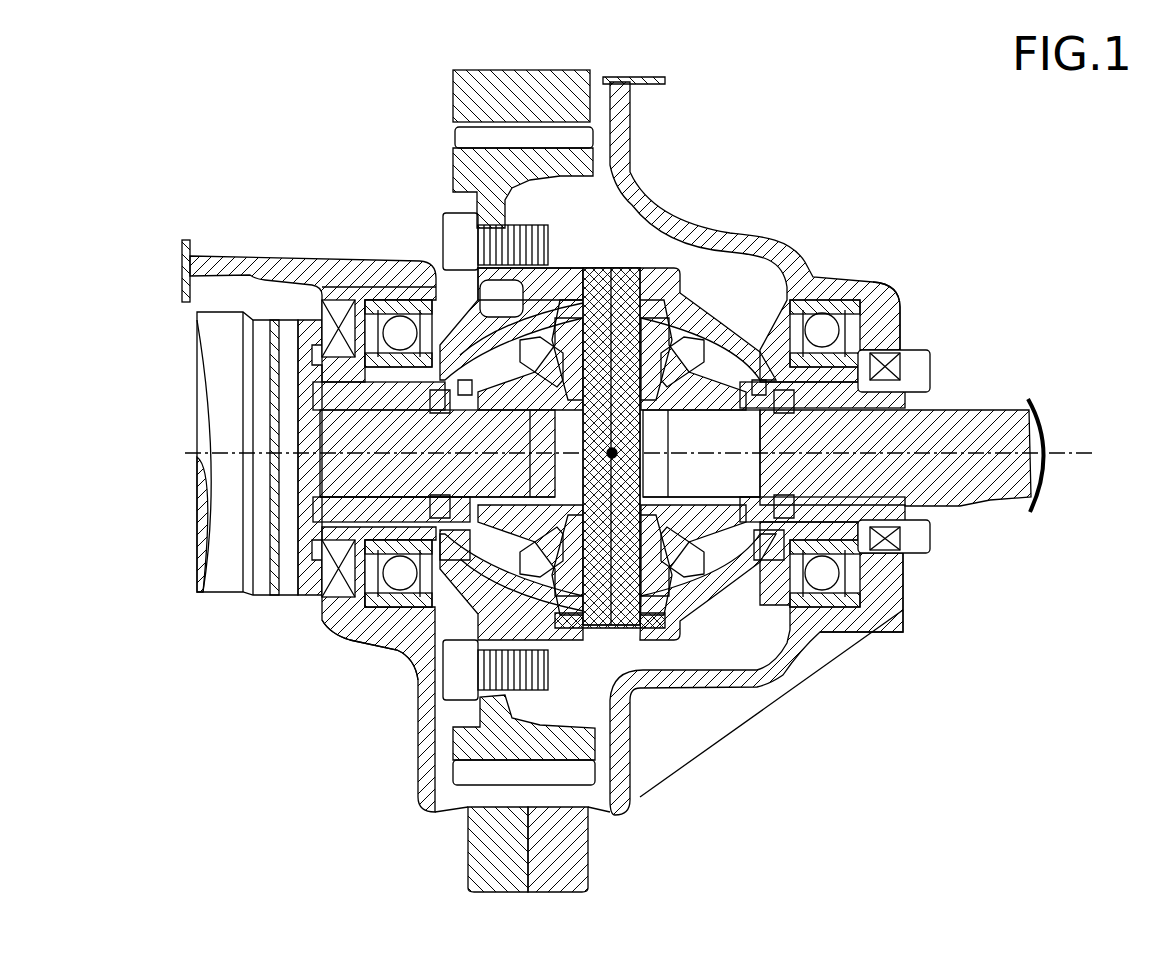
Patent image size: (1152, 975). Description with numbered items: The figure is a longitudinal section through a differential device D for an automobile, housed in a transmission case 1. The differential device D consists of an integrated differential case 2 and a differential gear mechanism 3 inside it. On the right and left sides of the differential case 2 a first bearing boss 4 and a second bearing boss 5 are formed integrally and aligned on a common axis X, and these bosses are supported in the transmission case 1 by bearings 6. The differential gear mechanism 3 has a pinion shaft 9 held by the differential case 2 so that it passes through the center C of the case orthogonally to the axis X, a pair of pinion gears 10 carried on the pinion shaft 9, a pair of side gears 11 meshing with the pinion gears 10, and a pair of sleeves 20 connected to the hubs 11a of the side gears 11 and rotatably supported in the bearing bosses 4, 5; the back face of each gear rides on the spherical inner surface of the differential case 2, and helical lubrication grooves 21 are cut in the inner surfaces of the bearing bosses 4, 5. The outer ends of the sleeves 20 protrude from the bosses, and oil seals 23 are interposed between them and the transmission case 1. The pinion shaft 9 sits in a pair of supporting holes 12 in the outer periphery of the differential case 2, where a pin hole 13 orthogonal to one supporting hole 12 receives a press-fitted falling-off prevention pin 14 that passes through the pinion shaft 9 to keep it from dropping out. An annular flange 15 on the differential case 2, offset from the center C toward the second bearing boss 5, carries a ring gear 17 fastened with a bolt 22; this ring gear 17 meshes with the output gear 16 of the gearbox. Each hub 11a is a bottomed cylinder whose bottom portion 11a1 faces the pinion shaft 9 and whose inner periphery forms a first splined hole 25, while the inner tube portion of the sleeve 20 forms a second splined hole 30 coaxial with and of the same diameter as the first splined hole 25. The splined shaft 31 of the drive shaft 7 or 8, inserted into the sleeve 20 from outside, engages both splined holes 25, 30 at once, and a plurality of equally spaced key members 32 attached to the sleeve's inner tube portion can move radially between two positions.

The transmission case 1 is at (212, 262).
The differential case 2 is at (676, 272).
The differential gear mechanism 3 is at (566, 298).
The first bearing boss 4 is at (745, 345).
The second bearing boss 5 is at (378, 325).
The bearing 6 is at (400, 328).
The drive shaft 7 is at (208, 375).
The drive shaft 8 is at (965, 413).
The pinion shaft 9 is at (660, 598).
The pinion gear 10 is at (530, 335).
The side gear 11 is at (520, 397).
The hub 11a is at (556, 428).
The bottom portion 11a1 is at (565, 470).
The supporting hole 12 is at (636, 292).
The pin hole 13 is at (672, 672).
The falling-off prevention pin 14 is at (640, 672).
The annular flange 15 is at (515, 228).
The output gear 16 is at (518, 95).
The ring gear 17 is at (462, 158).
The sleeve 20 is at (930, 388).
The helical lubrication groove 21 is at (355, 410).
The bolt 22 is at (450, 225).
The oil seal 23 is at (345, 600).
The first splined hole 25 is at (500, 560).
The second splined hole 30 is at (440, 408).
The splined shaft 31 is at (460, 565).
The key member 32 is at (462, 410).
The center C is at (610, 448).
The differential device D is at (617, 240).
The axis X is at (1063, 452).